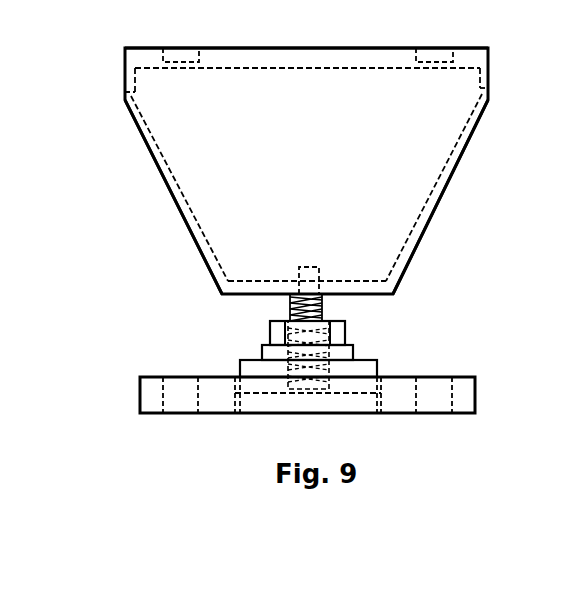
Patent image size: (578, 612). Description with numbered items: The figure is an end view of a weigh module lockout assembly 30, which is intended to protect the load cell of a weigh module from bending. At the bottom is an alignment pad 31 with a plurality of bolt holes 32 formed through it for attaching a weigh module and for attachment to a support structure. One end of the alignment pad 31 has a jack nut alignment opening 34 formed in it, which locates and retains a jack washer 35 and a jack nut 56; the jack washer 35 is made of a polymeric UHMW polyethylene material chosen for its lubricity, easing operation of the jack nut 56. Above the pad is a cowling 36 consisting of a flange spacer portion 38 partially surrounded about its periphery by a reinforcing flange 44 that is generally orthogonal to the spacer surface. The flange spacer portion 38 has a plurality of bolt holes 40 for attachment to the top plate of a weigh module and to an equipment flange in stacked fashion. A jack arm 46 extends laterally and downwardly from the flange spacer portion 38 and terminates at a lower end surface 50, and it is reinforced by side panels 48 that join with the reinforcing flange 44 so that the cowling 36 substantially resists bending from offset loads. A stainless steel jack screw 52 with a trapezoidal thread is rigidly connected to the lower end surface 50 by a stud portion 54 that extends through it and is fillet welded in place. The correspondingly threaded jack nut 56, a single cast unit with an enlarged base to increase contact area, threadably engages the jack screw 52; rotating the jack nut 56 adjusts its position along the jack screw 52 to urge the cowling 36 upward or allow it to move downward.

The weigh module lockout assembly 30 is at (127, 286).
The alignment pad 31 is at (477, 391).
The bolt holes 32 is at (196, 403).
The jack nut alignment opening 34 is at (385, 404).
The jack washer 35 is at (240, 404).
The cowling 36 is at (458, 263).
The flange spacer portion 38 is at (332, 47).
The bolt holes 40 is at (165, 59).
The reinforcing flange 44 is at (131, 87).
The jack arm 46 is at (332, 152).
The side panels 48 is at (170, 188).
The lower end surface 50 is at (266, 279).
The jack screw 52 is at (325, 301).
The stud portion 54 is at (320, 271).
The jack nut 56 is at (268, 341).